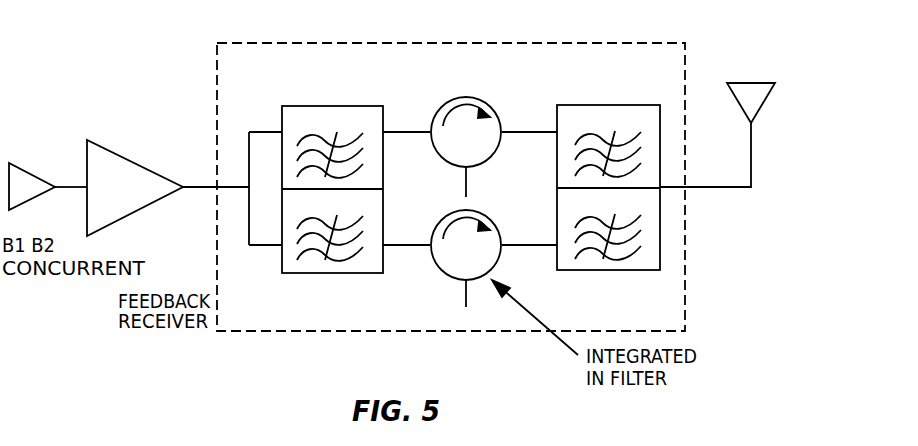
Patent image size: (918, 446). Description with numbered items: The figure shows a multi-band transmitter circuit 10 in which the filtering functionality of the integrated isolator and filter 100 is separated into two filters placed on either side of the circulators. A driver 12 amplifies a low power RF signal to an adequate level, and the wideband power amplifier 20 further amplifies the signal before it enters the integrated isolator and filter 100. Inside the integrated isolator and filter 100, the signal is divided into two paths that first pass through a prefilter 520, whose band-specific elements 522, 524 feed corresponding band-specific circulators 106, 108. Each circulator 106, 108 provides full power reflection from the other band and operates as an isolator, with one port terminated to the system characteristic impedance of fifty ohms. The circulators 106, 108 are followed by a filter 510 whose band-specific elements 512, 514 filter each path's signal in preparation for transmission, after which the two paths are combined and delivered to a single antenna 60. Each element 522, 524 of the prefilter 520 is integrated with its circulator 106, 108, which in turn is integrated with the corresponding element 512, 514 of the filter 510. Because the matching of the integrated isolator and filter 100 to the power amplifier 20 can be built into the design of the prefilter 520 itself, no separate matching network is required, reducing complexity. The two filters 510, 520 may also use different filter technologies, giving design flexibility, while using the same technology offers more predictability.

The multi-band transmitter circuit 10 is at (136, 72).
The driver 12 is at (46, 167).
The wideband power amplifier 20 is at (135, 180).
The integrated isolator and filter 100 is at (625, 71).
The prefilter 520 is at (331, 106).
The prefilter element 522 is at (375, 130).
The prefilter element 524 is at (375, 215).
The circulator 106 is at (482, 150).
The circulator 108 is at (482, 264).
The filter 510 is at (608, 105).
The filter element 512 is at (652, 130).
The filter element 514 is at (652, 212).
The antenna 60 is at (726, 112).